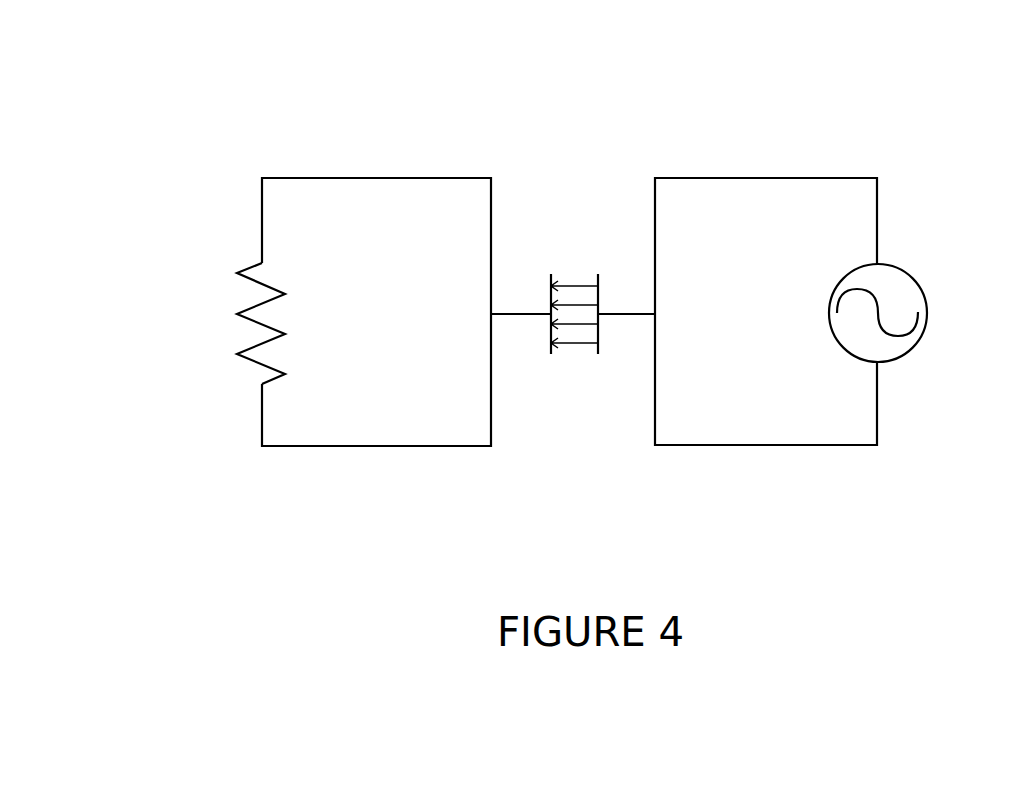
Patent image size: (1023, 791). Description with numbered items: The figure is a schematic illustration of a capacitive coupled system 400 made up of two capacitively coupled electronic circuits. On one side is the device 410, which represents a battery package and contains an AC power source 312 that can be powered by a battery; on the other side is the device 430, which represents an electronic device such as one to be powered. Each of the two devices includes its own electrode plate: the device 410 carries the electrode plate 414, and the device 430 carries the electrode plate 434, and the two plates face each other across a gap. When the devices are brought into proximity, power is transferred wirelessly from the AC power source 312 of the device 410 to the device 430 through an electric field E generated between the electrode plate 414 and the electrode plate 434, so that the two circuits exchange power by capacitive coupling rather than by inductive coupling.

The capacitive coupled system 400 is at (536, 77).
The device 430 is at (354, 150).
The device 410 is at (818, 149).
The AC power source 312 is at (902, 265).
The electrode plate 434 is at (548, 298).
The electrode plate 414 is at (597, 298).